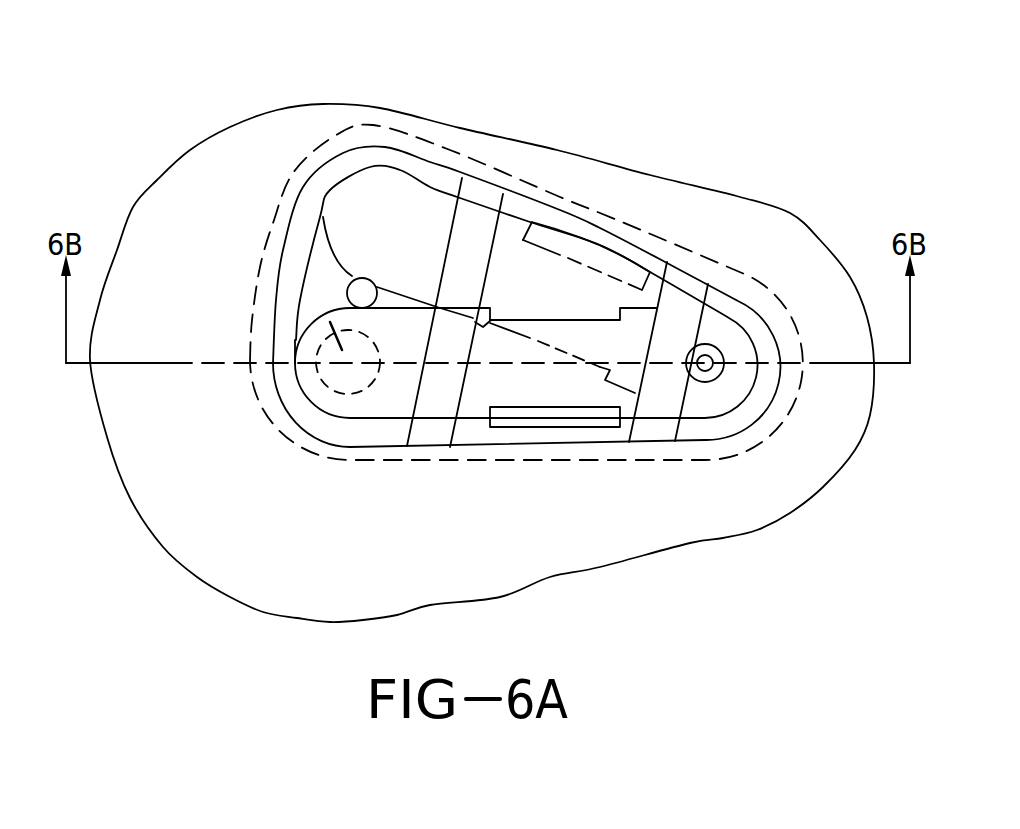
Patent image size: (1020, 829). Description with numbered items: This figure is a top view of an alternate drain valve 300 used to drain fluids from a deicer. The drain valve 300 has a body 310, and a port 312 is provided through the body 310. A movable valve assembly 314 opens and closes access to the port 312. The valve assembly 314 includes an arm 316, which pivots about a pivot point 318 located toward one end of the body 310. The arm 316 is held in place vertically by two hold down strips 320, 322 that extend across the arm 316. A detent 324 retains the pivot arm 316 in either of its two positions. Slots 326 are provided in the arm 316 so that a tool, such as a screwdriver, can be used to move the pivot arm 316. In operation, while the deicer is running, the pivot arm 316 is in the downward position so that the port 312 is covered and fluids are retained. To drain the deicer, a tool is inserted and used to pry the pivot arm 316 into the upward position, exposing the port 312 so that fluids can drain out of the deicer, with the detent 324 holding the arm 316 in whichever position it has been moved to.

The drain valve 300 is at (792, 118).
The body 310 is at (607, 187).
The port 312 is at (317, 303).
The valve assembly 314 is at (401, 295).
The arm 316 is at (325, 402).
The pivot point 318 is at (707, 362).
The hold down strip 320 is at (647, 428).
The hold down strip 322 is at (433, 432).
The detent 324 is at (360, 290).
The slots 326 is at (618, 270).